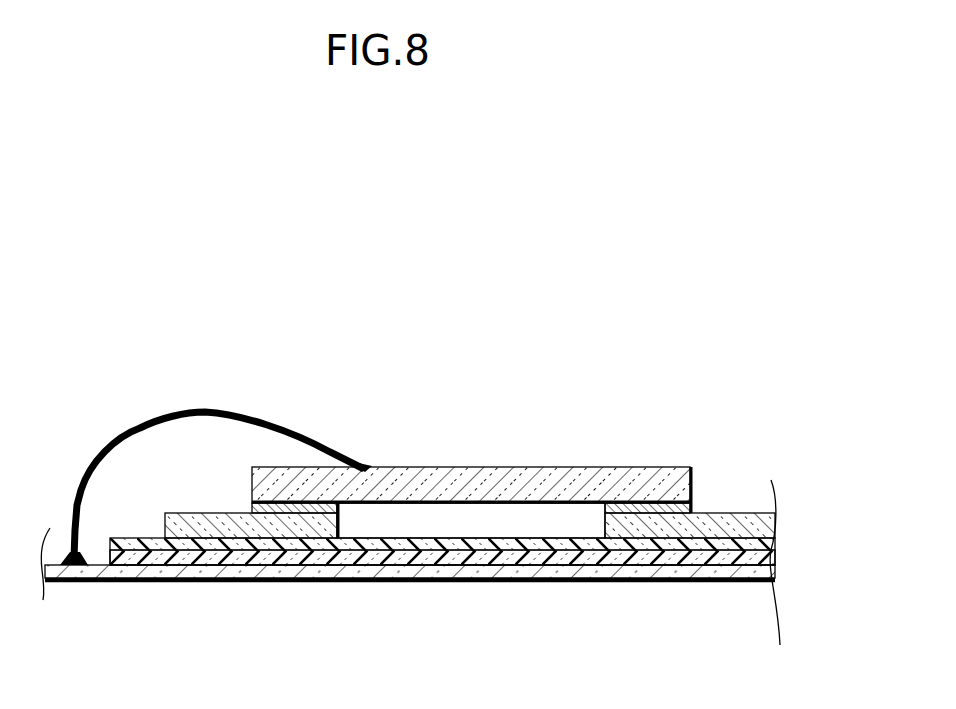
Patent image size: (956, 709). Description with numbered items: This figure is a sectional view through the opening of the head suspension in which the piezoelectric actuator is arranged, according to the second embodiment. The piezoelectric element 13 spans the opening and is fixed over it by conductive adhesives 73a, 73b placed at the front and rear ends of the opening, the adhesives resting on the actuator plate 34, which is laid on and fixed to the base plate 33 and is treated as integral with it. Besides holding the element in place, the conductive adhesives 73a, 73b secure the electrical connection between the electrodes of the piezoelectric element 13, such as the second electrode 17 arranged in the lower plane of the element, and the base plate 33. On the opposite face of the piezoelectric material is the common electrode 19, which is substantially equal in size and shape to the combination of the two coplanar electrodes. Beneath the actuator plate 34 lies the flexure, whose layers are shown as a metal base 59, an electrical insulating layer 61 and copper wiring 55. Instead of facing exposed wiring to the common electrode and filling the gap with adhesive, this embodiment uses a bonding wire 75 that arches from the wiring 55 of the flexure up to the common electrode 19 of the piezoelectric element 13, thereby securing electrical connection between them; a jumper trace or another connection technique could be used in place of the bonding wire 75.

The piezoelectric element 13 is at (468, 478).
The second electrode 17 is at (560, 497).
The common electrode 19 is at (472, 431).
The base plate 33 is at (502, 462).
The actuator plate 34 is at (166, 517).
The wiring 55 is at (390, 580).
The metal base 59 is at (773, 547).
The electrical insulating layer 61 is at (773, 558).
The conductive adhesive 73a is at (694, 507).
The conductive adhesive 73b is at (250, 505).
The bonding wire 75 is at (132, 428).